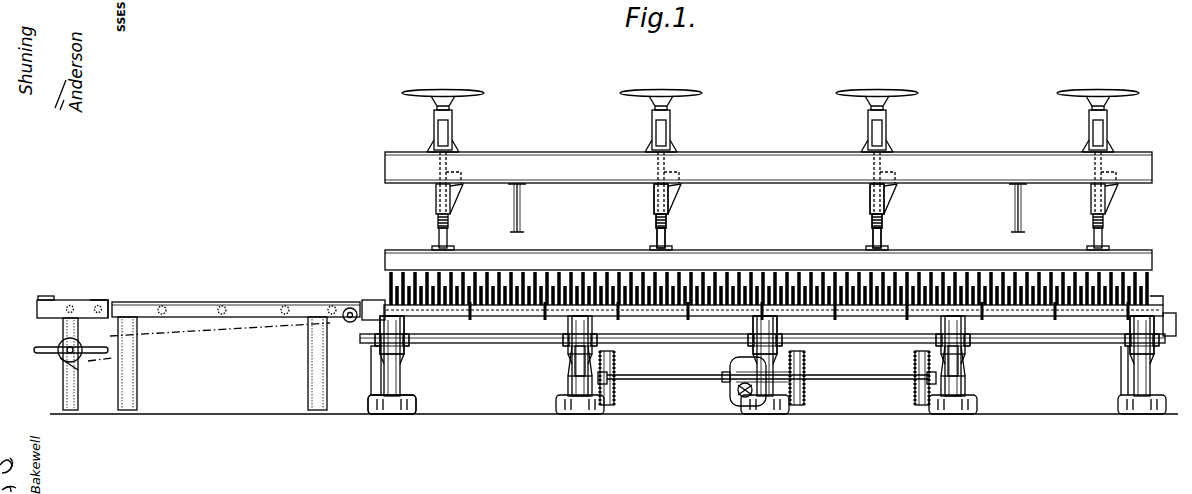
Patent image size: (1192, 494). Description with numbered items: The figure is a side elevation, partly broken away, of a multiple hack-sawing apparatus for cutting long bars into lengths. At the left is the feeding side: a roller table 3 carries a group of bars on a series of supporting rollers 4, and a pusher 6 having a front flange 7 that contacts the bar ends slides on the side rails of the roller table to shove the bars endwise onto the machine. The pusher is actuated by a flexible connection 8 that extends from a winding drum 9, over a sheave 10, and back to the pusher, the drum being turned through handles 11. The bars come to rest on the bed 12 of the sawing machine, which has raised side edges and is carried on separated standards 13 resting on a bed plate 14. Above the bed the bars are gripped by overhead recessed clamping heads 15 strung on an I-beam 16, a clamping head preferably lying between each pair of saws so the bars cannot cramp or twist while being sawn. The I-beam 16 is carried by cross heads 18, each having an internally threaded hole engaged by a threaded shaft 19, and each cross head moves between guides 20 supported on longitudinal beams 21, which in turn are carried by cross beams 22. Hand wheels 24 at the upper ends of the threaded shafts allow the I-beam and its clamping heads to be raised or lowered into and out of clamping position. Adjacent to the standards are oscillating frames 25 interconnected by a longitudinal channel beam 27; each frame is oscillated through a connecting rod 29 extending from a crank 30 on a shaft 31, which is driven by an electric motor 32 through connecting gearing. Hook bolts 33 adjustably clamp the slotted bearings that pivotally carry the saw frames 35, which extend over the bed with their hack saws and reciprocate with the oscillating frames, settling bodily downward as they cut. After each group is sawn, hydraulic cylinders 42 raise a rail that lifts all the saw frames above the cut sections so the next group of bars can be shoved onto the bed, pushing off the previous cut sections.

The roller table 3 is at (214, 302).
The supporting rollers 4 is at (162, 306).
The pusher 6 is at (80, 300).
The front flange 7 is at (98, 300).
The flexible connection 8 is at (233, 330).
The winding drum 9 is at (60, 362).
The sheave 10 is at (349, 322).
The handles 11 is at (60, 345).
The bed 12 is at (520, 311).
The standards 13 is at (386, 369).
The bed plate 14 is at (392, 413).
The clamping heads 15 is at (437, 273).
The I-beam 16 is at (762, 258).
The cross heads 18 is at (667, 238).
The threaded shaft 19 is at (667, 223).
The guides 20 is at (653, 227).
The longitudinal beams 21 is at (757, 162).
The cross beams 22 is at (1031, 212).
The hand wheels 24 is at (1151, 93).
The oscillating frames 25 is at (400, 352).
The longitudinal beam 27 is at (678, 316).
The connecting rod 29 is at (570, 354).
The crank 30 is at (568, 382).
The shaft 31 is at (680, 380).
The electric motor 32 is at (738, 380).
The hook bolts 33 is at (469, 317).
The saw frame 35 is at (390, 296).
The hydraulic cylinders 42 is at (405, 320).